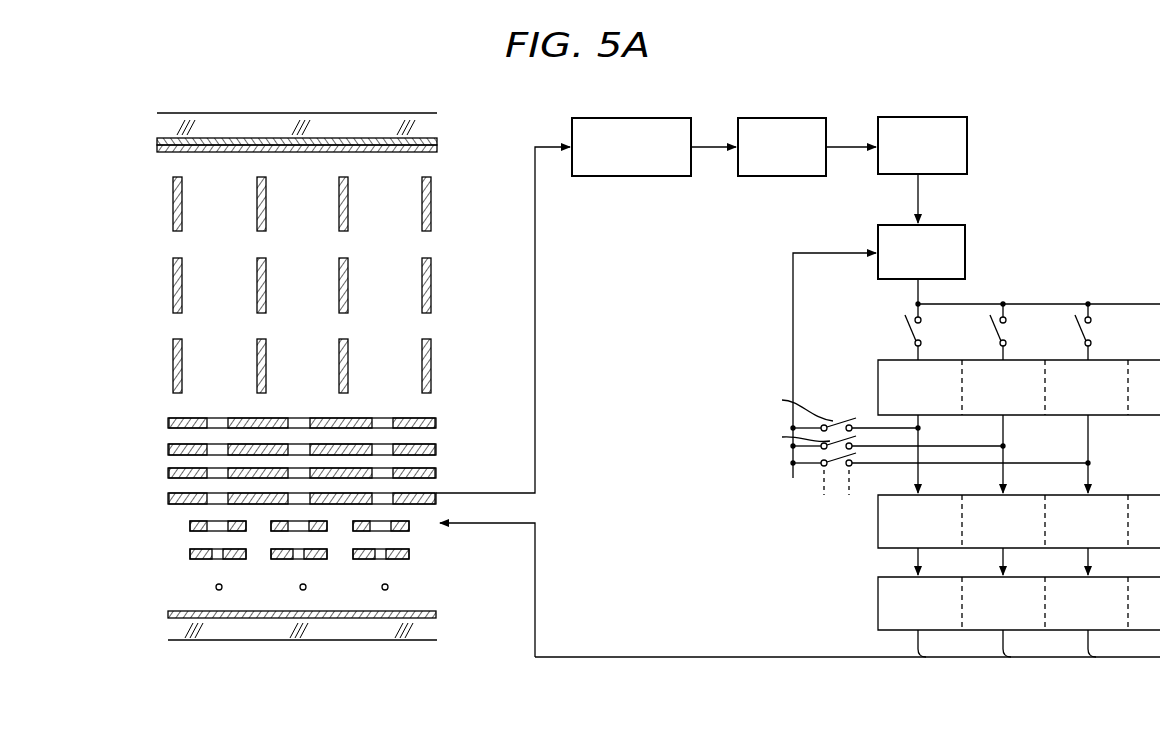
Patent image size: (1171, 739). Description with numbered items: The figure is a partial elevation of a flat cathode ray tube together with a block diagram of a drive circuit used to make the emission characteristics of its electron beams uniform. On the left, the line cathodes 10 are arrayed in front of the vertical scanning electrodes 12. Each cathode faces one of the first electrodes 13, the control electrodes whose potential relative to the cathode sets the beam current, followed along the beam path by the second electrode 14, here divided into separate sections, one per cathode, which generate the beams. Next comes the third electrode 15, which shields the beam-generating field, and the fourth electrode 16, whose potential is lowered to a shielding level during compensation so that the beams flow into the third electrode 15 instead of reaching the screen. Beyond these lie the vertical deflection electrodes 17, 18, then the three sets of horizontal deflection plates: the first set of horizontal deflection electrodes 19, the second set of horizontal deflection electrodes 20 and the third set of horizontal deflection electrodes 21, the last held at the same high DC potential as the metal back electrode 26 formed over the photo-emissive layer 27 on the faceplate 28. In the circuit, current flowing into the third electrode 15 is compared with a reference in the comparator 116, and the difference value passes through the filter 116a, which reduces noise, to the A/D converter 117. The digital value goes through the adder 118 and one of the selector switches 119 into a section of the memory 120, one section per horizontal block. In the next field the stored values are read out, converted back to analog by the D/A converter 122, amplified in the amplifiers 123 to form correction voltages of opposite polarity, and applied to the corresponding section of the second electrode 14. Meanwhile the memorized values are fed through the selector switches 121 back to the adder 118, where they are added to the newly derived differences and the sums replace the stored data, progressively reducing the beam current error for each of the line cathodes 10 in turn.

The line cathodes 10 is at (215, 587).
The vertical scanning electrodes 12 is at (178, 614).
The first electrodes 13 is at (190, 554).
The second electrode 14 is at (190, 526).
The third electrode 15 is at (168, 495).
The fourth electrode 16 is at (168, 470).
The vertical deflection electrode 17 is at (168, 446).
The vertical deflection electrode 18 is at (168, 420).
The DH-1 horizontal deflection electrodes 19 is at (173, 363).
The DH-2 horizontal deflection electrodes 20 is at (173, 283).
The DH-3 horizontal deflection electrodes 21 is at (173, 205).
The metal back electrode 26 is at (160, 150).
The photo-emissive layer 27 is at (160, 142).
The faceplate 28 is at (160, 124).
The comparator 116 is at (649, 118).
The filter 116a is at (778, 118).
The A/D converter 117 is at (930, 117).
The adder 118 is at (965, 235).
The selector switches 119 is at (910, 331).
The memory 120 is at (878, 384).
The selector switches 121 is at (790, 421).
The D/A converter 122 is at (878, 526).
The amplifiers 123 is at (878, 606).